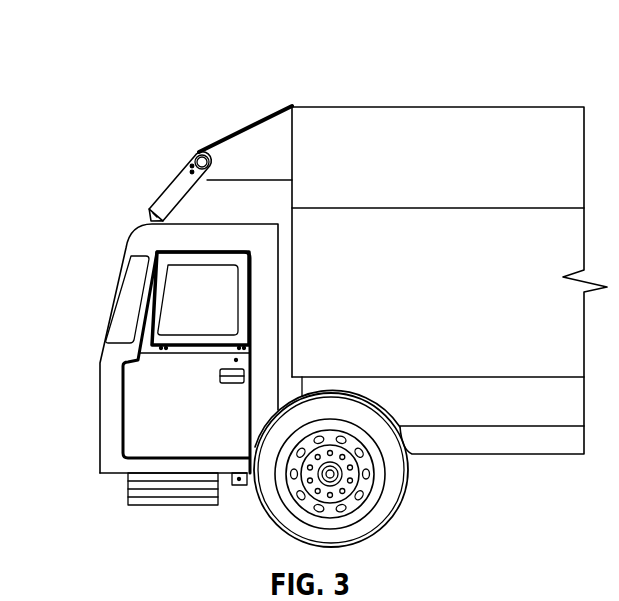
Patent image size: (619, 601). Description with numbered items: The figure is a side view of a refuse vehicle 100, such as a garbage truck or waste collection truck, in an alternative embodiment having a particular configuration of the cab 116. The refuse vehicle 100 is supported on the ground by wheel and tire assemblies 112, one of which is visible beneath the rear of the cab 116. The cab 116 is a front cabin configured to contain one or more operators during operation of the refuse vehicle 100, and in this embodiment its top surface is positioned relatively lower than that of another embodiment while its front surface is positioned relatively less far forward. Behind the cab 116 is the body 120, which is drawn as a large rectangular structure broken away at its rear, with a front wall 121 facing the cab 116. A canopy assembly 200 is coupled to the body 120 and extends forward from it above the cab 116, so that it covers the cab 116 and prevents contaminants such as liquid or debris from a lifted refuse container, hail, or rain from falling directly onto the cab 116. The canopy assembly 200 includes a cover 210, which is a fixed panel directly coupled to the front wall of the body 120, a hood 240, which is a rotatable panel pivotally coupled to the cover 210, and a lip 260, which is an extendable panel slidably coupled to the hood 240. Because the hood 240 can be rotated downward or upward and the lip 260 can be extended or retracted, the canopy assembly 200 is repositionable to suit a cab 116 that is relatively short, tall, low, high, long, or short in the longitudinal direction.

The refuse vehicle 100 is at (303, 80).
The wheel and tire assemblies 112 is at (415, 502).
The cab 116 is at (110, 313).
The body 120 is at (332, 107).
The front wall of cargo body 121 is at (285, 224).
The canopy assembly 200 is at (110, 93).
The cover 210 is at (265, 110).
The hood 240 is at (177, 175).
The lip 260 is at (155, 218).